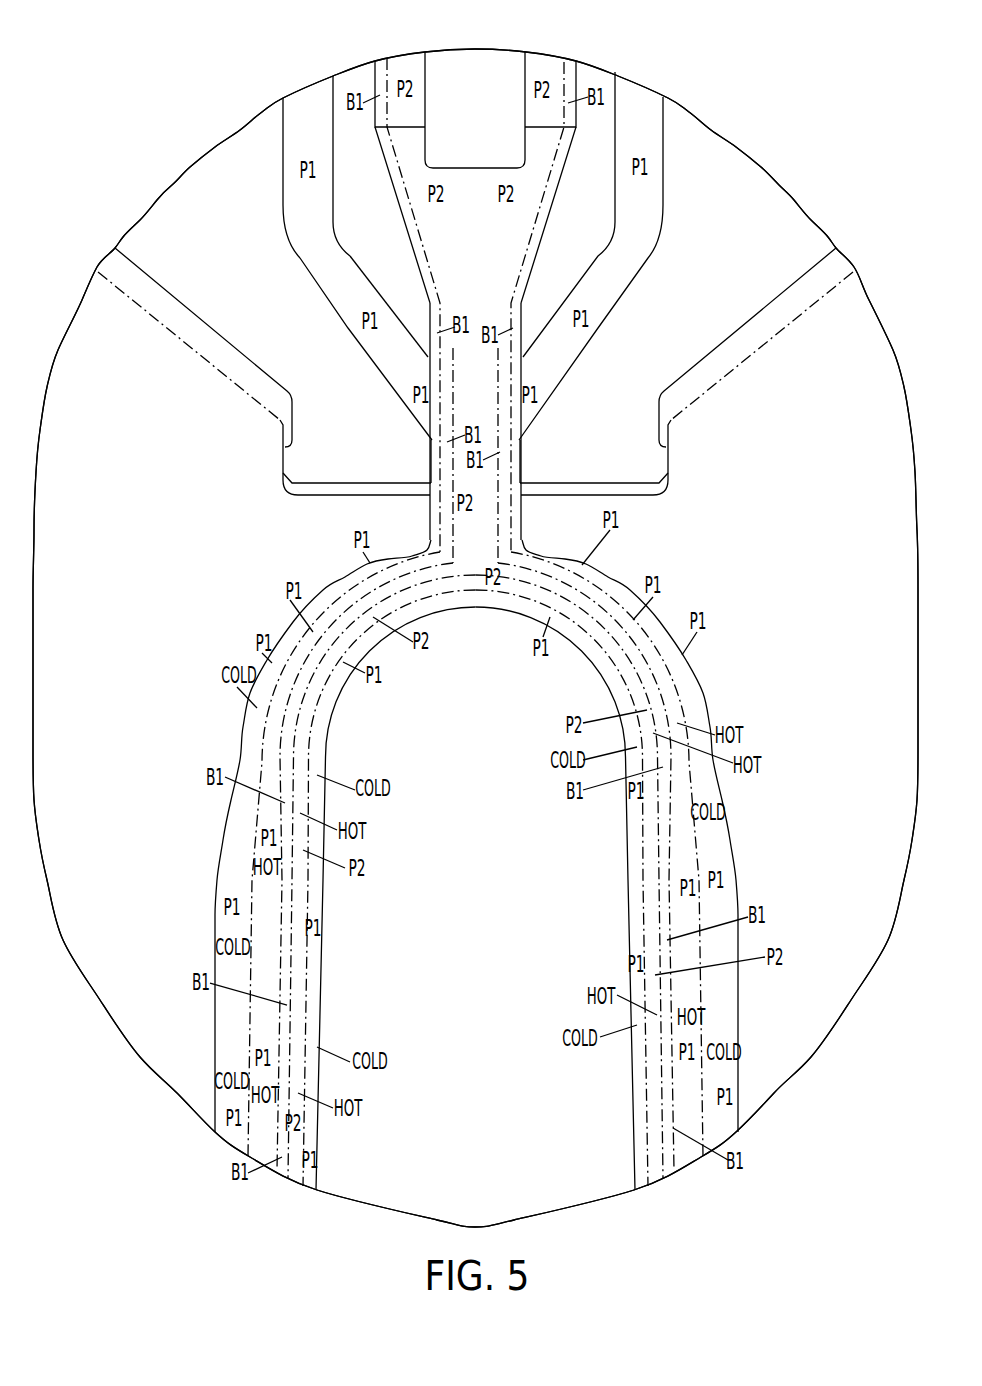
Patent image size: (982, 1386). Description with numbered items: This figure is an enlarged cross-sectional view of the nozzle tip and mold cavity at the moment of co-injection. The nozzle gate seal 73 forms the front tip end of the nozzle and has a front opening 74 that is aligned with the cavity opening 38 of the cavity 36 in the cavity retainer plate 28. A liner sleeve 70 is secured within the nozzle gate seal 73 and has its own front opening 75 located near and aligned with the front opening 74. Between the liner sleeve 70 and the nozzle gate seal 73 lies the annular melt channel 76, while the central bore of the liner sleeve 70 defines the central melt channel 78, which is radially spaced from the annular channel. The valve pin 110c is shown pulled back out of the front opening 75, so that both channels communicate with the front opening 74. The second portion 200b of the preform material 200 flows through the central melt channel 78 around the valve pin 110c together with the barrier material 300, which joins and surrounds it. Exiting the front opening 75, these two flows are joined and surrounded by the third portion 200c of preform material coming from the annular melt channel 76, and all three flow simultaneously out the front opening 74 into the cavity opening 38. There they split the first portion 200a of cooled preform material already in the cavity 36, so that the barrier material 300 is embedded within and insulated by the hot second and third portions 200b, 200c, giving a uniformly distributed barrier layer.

The cavity retainer plate 28 is at (121, 723).
The cavity 36 is at (728, 827).
The cavity opening 38 is at (490, 548).
The liner sleeve 70 is at (358, 85).
The nozzle gate seal 73 is at (749, 167).
The front opening 74 is at (468, 482).
The front opening 75 is at (428, 318).
The annular melt channel 76 is at (283, 203).
The central melt channel 78 is at (419, 283).
The valve pin 110c is at (498, 63).
The preform material 200 is at (478, 592).
The first portion of cooled preform material 200a is at (693, 693).
The second portion of preform material 200b is at (603, 642).
The third portion of preform material 200c is at (595, 593).
The barrier material 300 is at (383, 60).